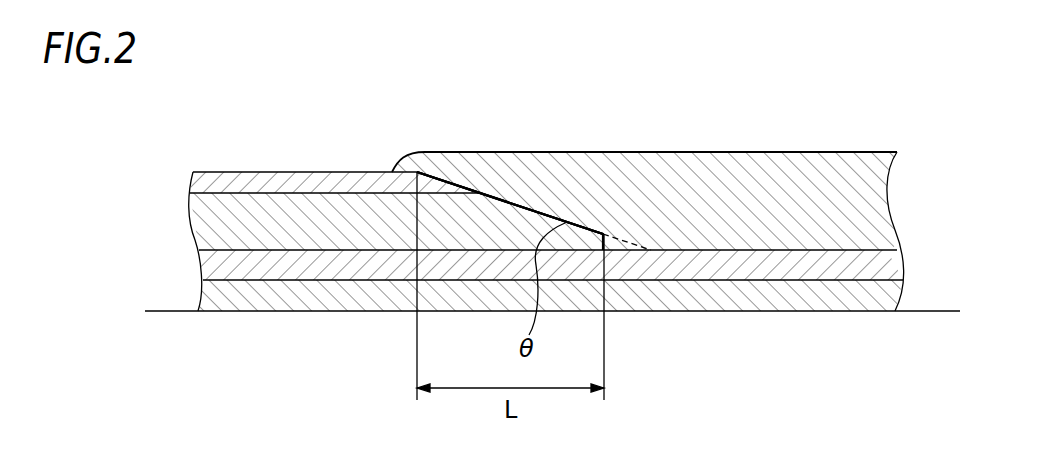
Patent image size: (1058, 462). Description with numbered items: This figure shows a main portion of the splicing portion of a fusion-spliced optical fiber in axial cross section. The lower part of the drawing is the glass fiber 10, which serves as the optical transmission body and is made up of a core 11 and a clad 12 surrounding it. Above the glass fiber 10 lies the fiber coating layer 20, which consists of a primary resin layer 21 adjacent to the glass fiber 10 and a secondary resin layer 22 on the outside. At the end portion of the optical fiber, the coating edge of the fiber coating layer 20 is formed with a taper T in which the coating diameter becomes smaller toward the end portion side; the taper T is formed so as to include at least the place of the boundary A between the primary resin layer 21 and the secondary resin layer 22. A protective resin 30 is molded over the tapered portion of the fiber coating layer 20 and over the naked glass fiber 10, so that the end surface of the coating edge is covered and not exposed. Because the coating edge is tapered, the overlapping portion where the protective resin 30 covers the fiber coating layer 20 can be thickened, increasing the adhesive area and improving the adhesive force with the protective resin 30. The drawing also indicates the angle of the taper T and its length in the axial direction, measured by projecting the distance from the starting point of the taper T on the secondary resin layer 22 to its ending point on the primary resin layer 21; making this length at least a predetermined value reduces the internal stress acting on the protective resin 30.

The glass fiber 10 is at (502, 277).
The core 11 is at (205, 300).
The clad 12 is at (205, 265).
The fiber coating layer 20 is at (471, 200).
The primary resin layer 21 is at (200, 218).
The secondary resin layer 22 is at (200, 183).
The protective resin 30 is at (787, 167).
The boundary A is at (480, 193).
The taper T is at (533, 208).